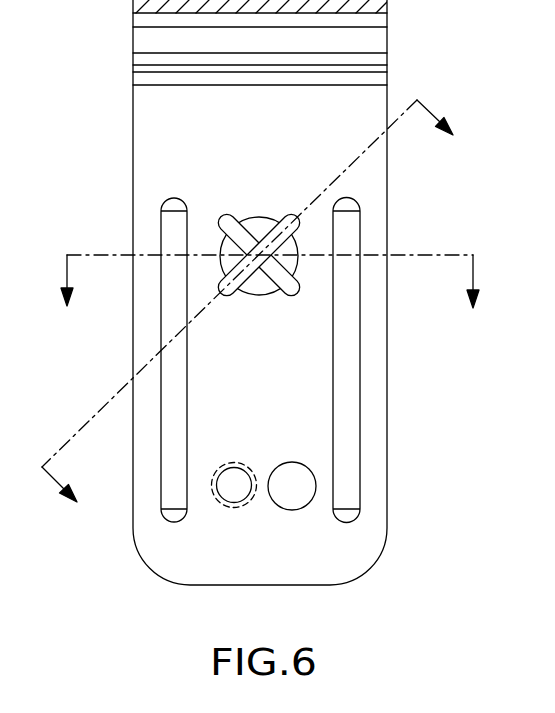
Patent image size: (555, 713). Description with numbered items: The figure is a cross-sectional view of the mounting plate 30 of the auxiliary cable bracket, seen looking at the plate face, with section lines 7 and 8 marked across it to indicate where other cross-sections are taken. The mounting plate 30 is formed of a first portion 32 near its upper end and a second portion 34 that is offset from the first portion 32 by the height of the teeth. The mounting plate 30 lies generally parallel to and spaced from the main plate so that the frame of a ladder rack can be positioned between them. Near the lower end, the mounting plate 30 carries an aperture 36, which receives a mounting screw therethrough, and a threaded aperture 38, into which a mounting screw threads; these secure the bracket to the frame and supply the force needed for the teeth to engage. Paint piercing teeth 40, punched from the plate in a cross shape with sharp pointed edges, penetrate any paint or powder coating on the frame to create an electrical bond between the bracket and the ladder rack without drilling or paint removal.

The mounting plate 30 is at (372, 421).
The first portion 32 is at (150, 40).
The second portion 34 is at (182, 137).
The aperture 36 is at (317, 470).
The threaded aperture 38 is at (217, 480).
The paint piercing teeth 40 is at (258, 228).
The section line 7- 7 is at (269, 299).
The section line 8- 8 is at (257, 315).